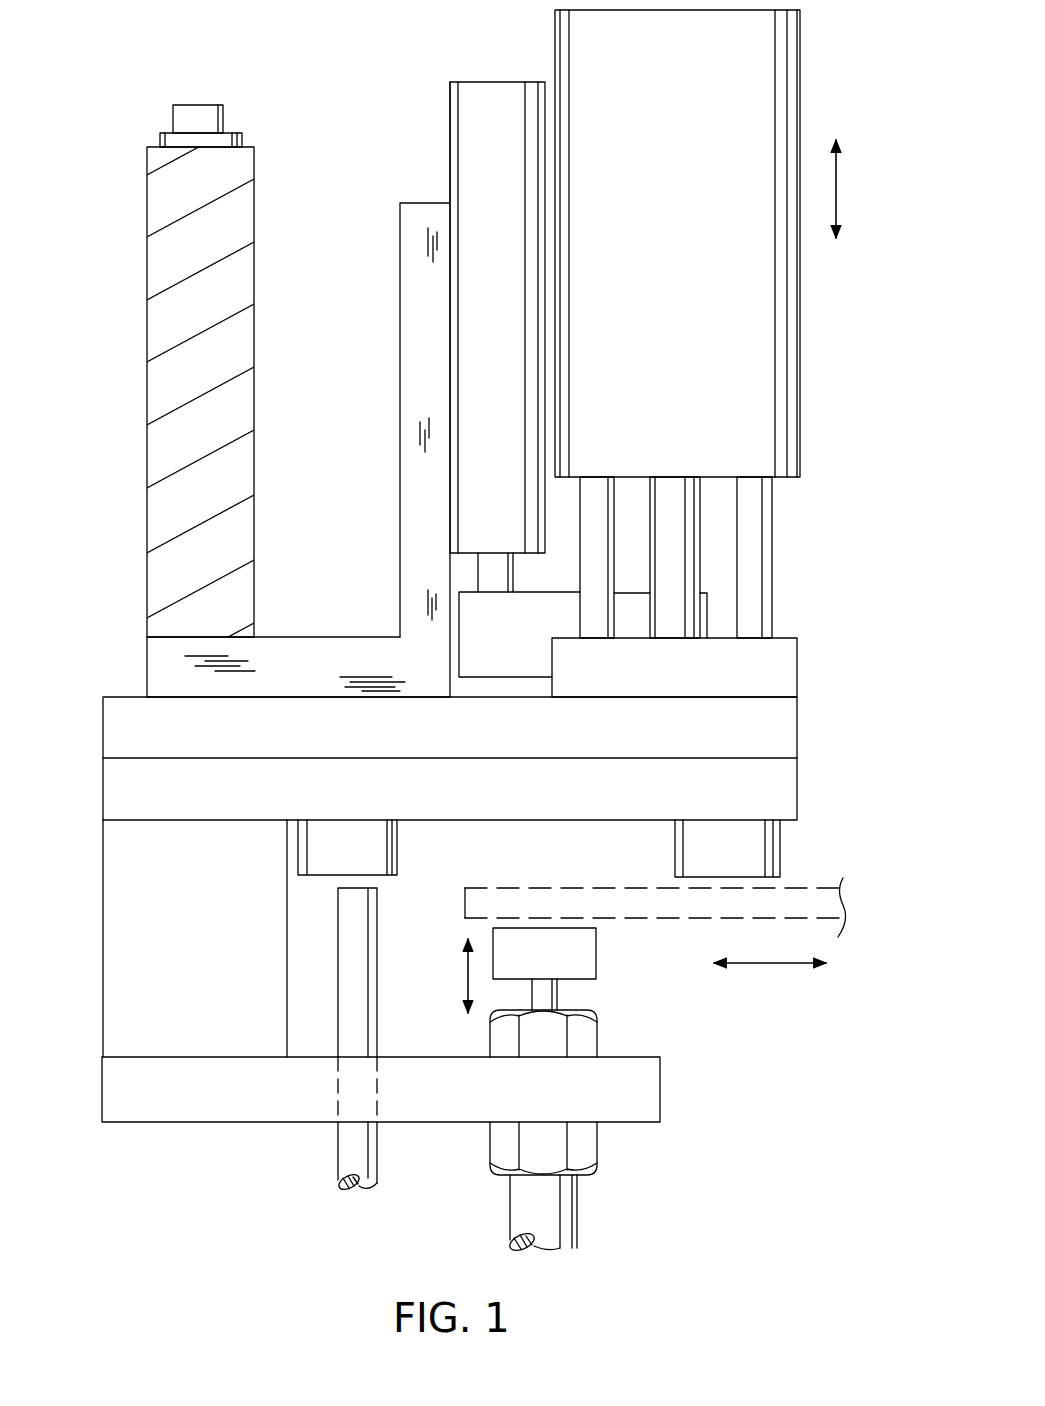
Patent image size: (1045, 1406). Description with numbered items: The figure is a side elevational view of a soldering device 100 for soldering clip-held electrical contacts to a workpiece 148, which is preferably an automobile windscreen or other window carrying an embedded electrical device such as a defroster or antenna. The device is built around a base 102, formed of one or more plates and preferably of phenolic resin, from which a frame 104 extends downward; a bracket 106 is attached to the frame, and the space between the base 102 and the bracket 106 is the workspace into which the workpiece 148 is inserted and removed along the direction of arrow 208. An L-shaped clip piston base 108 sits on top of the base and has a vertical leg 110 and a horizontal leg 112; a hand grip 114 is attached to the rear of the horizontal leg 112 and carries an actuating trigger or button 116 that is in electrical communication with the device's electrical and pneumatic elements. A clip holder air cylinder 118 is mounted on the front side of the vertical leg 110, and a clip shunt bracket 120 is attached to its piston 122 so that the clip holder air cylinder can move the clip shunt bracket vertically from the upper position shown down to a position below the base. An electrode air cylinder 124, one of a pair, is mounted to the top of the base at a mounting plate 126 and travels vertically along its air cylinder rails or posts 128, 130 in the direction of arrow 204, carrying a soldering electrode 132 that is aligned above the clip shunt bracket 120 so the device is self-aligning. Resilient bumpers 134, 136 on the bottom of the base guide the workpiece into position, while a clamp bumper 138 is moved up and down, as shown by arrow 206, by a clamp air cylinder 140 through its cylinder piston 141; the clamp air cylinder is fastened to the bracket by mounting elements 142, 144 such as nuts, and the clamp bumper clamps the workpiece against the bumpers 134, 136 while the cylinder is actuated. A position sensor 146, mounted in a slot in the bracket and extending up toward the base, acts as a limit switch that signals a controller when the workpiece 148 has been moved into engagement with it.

The soldering device 100 is at (114, 142).
The base 102 is at (104, 730).
The frame 104 is at (110, 953).
The bracket 106 is at (108, 1098).
The clip piston base 108 is at (396, 520).
The vertical leg 110 is at (412, 382).
The horizontal leg 112 is at (347, 650).
The hand grip 114 is at (155, 358).
The actuating trigger or button 116 is at (212, 117).
The clip holder air cylinder 118 is at (458, 158).
The clip shunt bracket 120 is at (531, 632).
The piston 122 is at (498, 570).
The electrode air cylinder 124 is at (782, 345).
The mounting plate 126 is at (783, 674).
The air cylinder rail or post 128 is at (603, 510).
The air cylinder rail or post 130 is at (748, 598).
The soldering electrode 132 is at (682, 543).
The bumper 134 is at (390, 847).
The bumper 136 is at (685, 840).
The clamp bumper 138 is at (597, 950).
The clamp air cylinder 140 is at (565, 1203).
The cylinder piston 141 is at (547, 995).
The mounting element 142 is at (490, 1147).
The mounting element 144 is at (597, 1037).
The position sensor 146 is at (338, 995).
The workpiece 148 is at (793, 888).
The arrow 204 is at (837, 207).
The arrow 206 is at (464, 977).
The arrow 208 is at (765, 963).